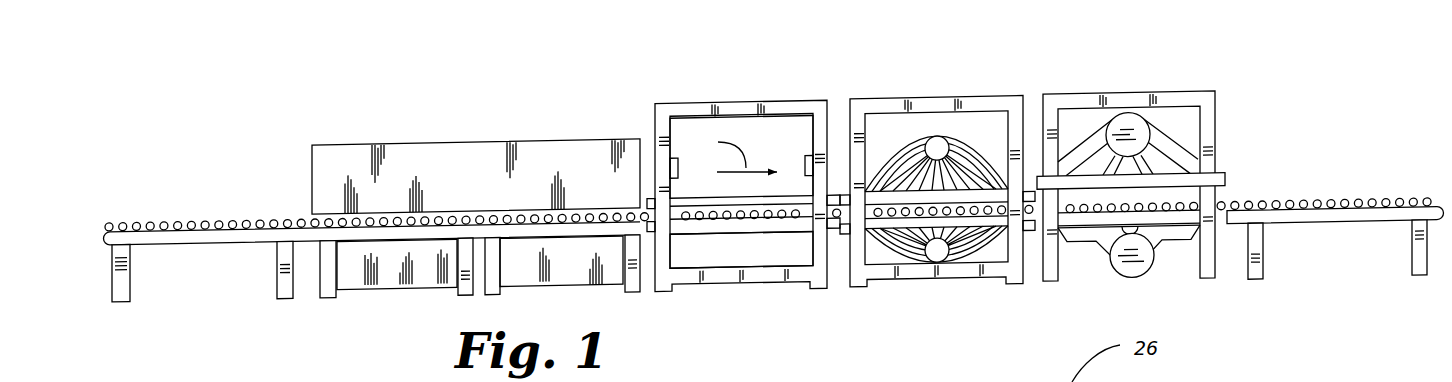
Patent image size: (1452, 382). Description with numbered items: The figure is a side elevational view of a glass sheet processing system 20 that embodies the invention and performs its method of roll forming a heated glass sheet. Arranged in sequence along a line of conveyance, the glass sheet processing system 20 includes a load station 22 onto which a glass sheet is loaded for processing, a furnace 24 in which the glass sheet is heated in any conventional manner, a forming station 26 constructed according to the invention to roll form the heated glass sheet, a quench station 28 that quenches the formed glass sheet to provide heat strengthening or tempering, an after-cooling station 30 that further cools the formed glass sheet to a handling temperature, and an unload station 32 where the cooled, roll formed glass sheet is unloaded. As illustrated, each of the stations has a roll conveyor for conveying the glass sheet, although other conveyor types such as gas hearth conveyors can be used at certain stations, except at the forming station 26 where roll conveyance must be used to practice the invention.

The glass sheet processing system 20 is at (1295, 88).
The load station 22 is at (182, 218).
The furnace 24 is at (473, 128).
The forming station 26 is at (730, 95).
The quench station 28 is at (942, 90).
The after-cooling station 30 is at (1143, 88).
The unload station 32 is at (1363, 190).